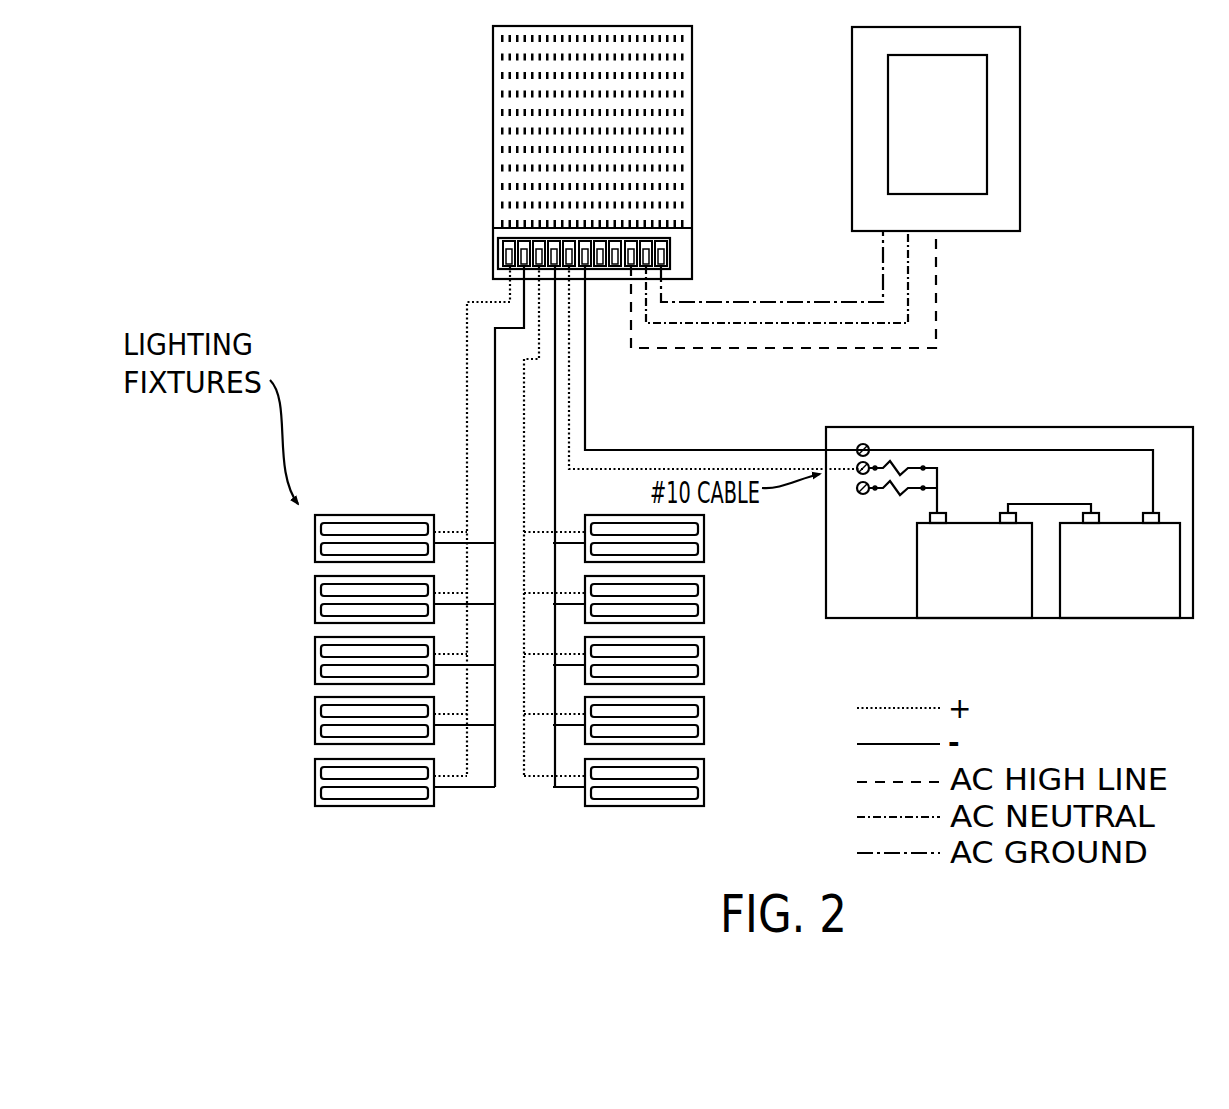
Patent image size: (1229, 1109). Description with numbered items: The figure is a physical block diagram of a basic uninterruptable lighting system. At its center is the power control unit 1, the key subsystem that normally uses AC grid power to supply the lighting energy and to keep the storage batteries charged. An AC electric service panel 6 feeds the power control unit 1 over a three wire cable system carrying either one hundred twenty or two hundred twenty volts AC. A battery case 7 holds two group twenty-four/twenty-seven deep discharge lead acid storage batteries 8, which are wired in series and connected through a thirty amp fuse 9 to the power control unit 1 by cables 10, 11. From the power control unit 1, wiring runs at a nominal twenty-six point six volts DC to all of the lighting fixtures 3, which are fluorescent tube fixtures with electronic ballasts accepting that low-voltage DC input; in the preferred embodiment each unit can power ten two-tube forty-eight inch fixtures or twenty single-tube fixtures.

The power control unit 1 is at (493, 113).
The lighting fixtures 3 is at (315, 543).
The AC electric service panel 6 is at (1020, 135).
The battery case 7 is at (989, 529).
The battery 8 is at (935, 605).
The fuse 9 is at (893, 492).
The cable 10 is at (693, 450).
The cable 11 is at (571, 470).